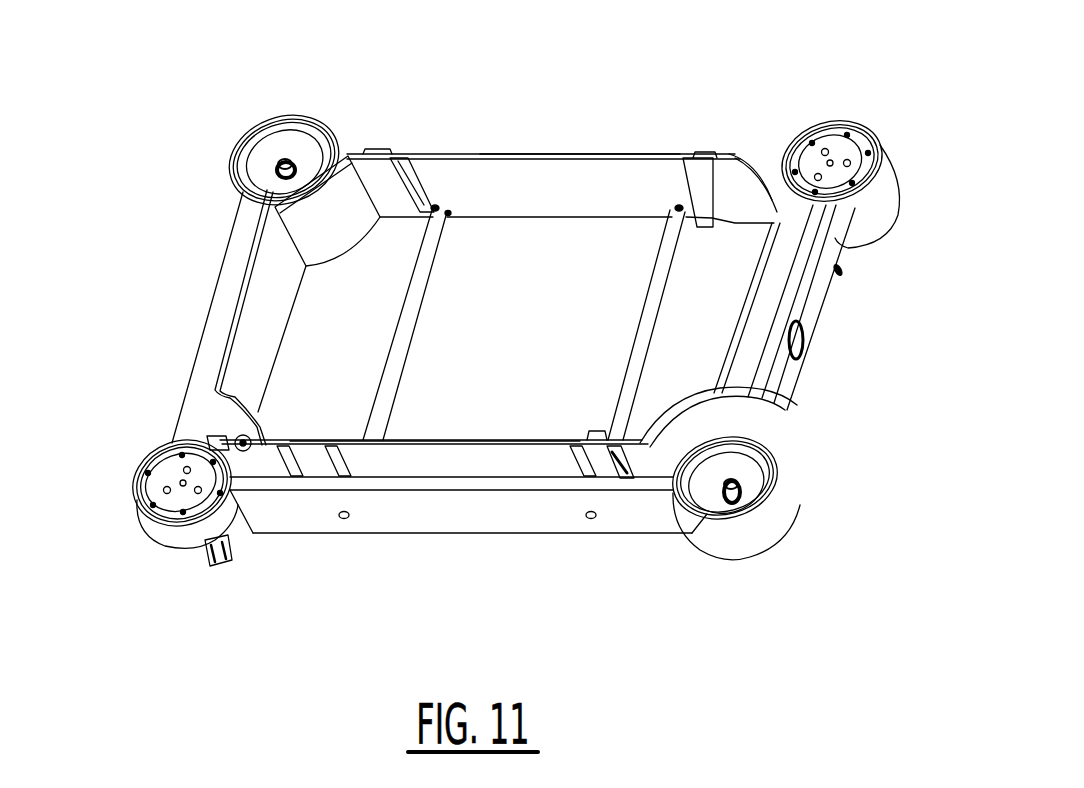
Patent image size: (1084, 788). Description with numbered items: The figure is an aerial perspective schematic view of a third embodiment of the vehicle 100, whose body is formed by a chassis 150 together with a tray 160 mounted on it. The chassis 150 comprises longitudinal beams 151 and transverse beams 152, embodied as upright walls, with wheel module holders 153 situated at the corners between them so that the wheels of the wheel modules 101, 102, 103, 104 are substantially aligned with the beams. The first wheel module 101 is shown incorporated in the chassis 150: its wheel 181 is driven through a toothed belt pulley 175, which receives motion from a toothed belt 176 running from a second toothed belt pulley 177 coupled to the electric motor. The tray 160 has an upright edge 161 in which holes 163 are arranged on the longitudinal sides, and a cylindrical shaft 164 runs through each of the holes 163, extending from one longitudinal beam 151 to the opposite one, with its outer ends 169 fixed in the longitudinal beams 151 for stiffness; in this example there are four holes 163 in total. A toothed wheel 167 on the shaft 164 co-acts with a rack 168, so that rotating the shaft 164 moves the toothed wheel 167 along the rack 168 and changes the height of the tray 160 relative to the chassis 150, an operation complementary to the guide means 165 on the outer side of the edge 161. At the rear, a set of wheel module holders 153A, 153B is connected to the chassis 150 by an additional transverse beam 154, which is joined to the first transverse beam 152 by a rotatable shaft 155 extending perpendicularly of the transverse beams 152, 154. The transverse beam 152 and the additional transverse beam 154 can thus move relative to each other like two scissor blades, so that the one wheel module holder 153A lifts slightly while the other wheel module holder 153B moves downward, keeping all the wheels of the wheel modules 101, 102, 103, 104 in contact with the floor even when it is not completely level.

The vehicle 100 is at (128, 155).
The first wheel module 101 is at (115, 513).
The wheel module 102 is at (847, 152).
The wheel module 103 is at (750, 483).
The wheel module 104 is at (275, 145).
The chassis 150 is at (513, 557).
The longitudinal beam 151 is at (359, 518).
The transverse beam 152 is at (232, 303).
The wheel module holder 153 is at (177, 540).
The wheel module holder 153A is at (753, 540).
The wheel module holder 153B is at (872, 210).
The additional transverse beam 154 is at (797, 270).
The rotatable shaft 155 is at (797, 343).
The tray 160 is at (470, 393).
The upright edge 161 is at (613, 173).
The hole 163 is at (420, 167).
The shaft 164 is at (410, 307).
The guide means 165 is at (613, 455).
The toothed wheel 167 is at (445, 210).
The rack 168 is at (397, 168).
The outer end 169 is at (591, 524).
The toothed belt pulley 175 is at (176, 470).
The toothed belt 176 is at (217, 443).
The second toothed belt pulley 177 is at (243, 436).
The wheel 181 is at (220, 557).